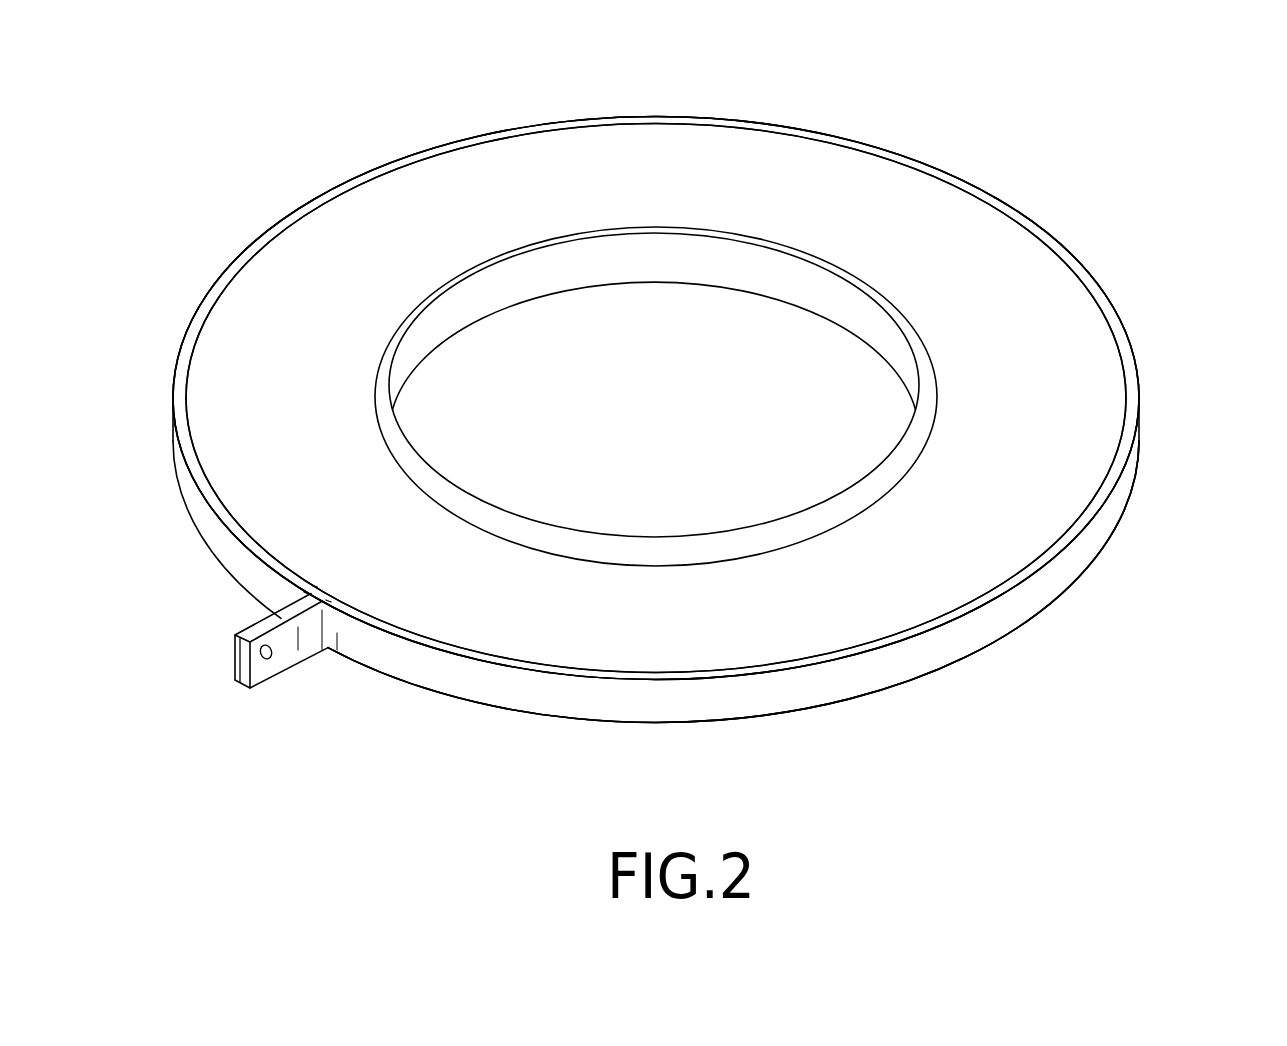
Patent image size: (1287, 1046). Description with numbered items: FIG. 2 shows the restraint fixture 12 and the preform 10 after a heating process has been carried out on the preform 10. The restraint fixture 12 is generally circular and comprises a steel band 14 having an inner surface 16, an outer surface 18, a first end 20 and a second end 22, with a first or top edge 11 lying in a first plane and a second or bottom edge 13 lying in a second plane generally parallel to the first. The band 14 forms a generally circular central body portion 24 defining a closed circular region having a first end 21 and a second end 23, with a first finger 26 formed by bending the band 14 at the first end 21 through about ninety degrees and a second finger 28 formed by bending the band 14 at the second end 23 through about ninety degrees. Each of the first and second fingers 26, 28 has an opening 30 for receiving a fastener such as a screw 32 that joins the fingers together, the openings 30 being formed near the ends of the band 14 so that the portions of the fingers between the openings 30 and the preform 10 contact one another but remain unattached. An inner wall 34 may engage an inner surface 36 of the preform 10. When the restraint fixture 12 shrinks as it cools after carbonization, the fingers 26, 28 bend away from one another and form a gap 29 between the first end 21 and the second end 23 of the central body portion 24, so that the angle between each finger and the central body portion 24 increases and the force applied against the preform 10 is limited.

The preform 10 is at (1060, 300).
The first or top edge 11 is at (918, 158).
The restraint fixture 12 is at (1150, 512).
The second or bottom edge 13 is at (590, 722).
The steel band 14 is at (1004, 621).
The inner surface 16 is at (817, 657).
The outer surface 18 is at (779, 701).
The first end 20 is at (234, 641).
The central body portion first end 21 is at (306, 592).
The second end 22 is at (244, 688).
The central body portion second end 23 is at (328, 600).
The central body portion 24 is at (708, 118).
The first finger 26 is at (260, 603).
The second finger 28 is at (297, 650).
The gap 29 is at (315, 586).
The opening 30 is at (272, 660).
The screw 32 is at (239, 665).
The inner wall 34 is at (573, 276).
The inner surface of preform 36 is at (703, 224).